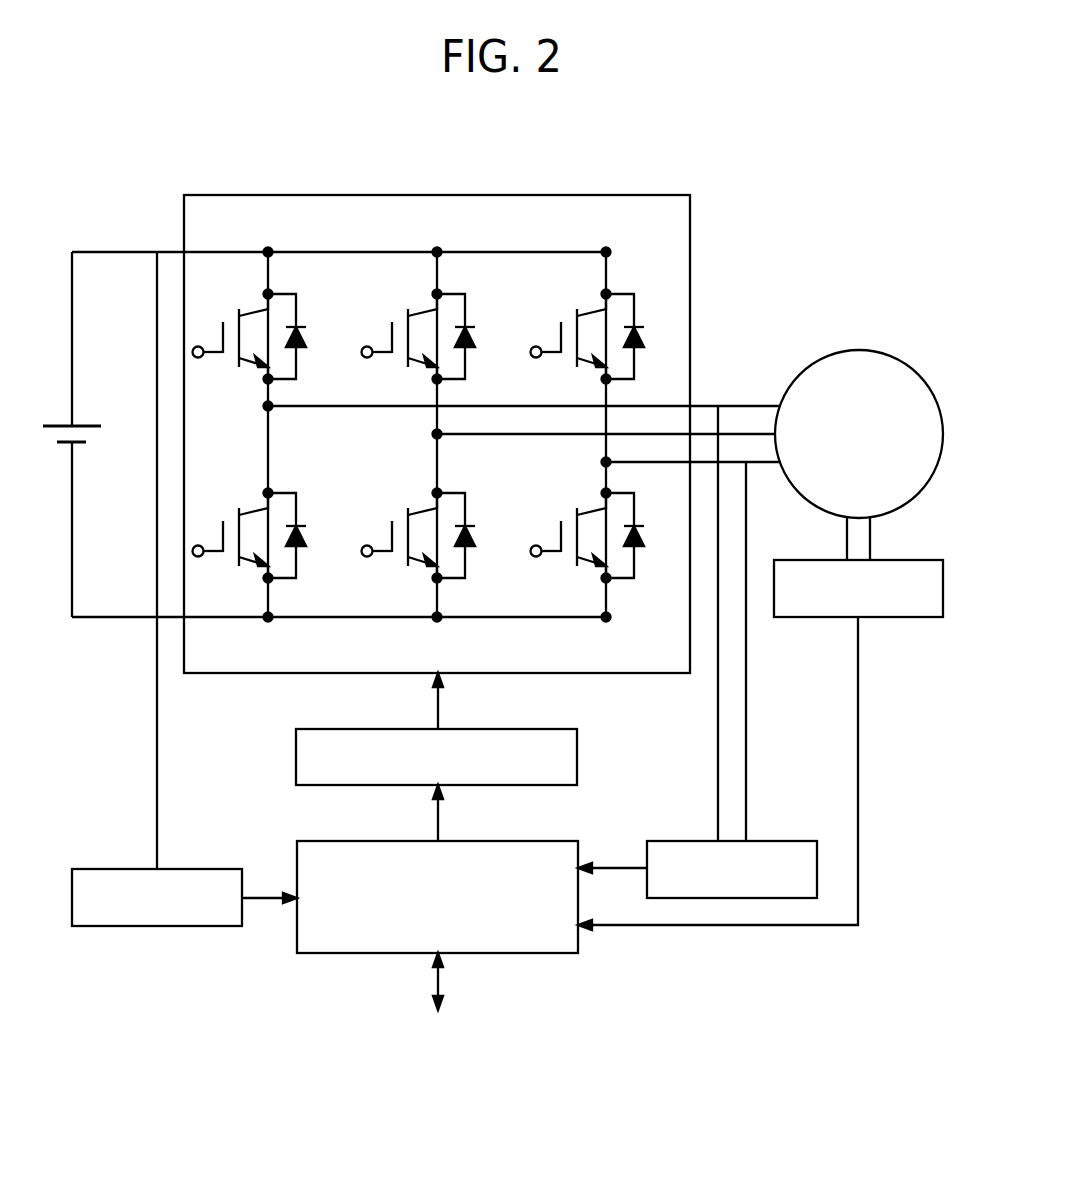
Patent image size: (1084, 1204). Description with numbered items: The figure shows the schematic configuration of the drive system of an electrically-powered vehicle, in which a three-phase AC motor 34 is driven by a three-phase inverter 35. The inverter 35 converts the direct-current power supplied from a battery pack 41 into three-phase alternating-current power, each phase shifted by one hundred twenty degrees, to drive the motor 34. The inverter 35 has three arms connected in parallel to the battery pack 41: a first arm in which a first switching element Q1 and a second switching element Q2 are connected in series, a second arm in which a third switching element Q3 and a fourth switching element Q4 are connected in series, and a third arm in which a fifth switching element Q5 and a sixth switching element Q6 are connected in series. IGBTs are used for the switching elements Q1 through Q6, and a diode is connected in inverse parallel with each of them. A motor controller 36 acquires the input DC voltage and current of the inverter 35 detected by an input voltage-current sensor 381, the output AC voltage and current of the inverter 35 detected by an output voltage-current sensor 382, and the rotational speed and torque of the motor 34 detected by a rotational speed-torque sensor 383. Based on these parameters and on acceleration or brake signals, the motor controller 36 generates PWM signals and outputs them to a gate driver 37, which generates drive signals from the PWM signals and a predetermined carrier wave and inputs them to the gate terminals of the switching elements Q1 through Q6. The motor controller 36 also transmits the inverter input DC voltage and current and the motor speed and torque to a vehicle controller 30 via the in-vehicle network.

The vehicle controller 30 is at (437, 995).
The three-phase AC motor 34 is at (914, 370).
The three-phase inverter 35 is at (438, 408).
The motor controller 36 is at (545, 841).
The gate driver 37 is at (545, 729).
The battery pack 41 is at (83, 424).
The input voltage-current sensor 381 is at (207, 869).
The output voltage-current sensor 382 is at (785, 841).
The rotational speed-torque sensor 383 is at (915, 560).
The first switching element Q1 is at (266, 336).
The second switching element Q2 is at (266, 535).
The third switching element Q3 is at (435, 336).
The fourth switching element Q4 is at (435, 535).
The fifth switching element Q5 is at (604, 336).
The sixth switching element Q6 is at (604, 535).